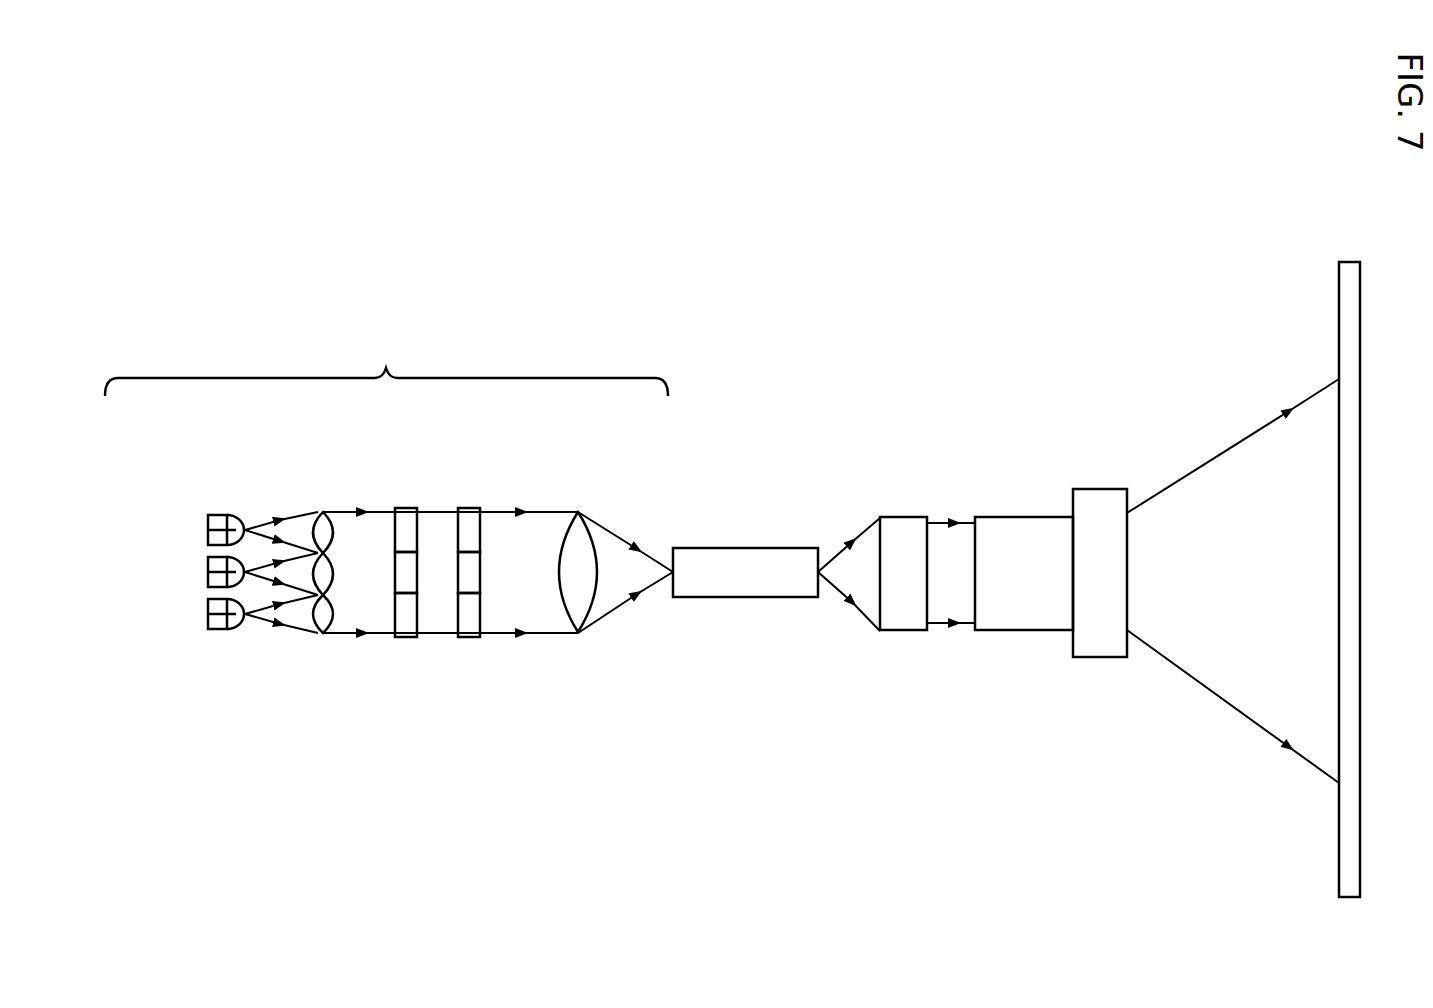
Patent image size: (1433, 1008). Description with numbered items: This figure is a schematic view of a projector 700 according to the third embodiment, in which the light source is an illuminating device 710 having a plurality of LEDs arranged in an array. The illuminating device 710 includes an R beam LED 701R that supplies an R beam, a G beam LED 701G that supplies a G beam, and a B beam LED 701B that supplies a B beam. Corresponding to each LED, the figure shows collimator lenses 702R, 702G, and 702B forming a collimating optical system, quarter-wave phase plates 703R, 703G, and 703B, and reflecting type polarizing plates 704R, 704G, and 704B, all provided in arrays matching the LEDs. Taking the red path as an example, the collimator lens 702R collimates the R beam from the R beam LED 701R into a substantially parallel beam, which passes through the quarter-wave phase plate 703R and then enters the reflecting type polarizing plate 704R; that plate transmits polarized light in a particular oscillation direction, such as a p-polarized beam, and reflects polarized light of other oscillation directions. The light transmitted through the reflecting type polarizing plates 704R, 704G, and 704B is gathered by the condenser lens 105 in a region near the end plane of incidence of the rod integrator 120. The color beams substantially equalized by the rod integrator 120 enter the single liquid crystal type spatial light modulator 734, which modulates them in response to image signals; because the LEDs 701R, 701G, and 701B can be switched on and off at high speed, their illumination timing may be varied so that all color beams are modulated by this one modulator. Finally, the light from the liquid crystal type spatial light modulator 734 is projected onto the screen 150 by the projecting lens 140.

The projector 700 is at (1030, 296).
The illuminating device 710 is at (386, 364).
The R beam LED 701R is at (208, 530).
The G beam LED 701G is at (208, 572).
The B beam LED 701B is at (208, 614).
The collimator lens 702R is at (320, 528).
The collimator lens 702G is at (323, 570).
The collimator lens 702B is at (321, 633).
The λ/4 phase plate 703R is at (405, 507).
The λ/4 phase plate 703G is at (403, 570).
The λ/4 phase plate 703B is at (412, 637).
The reflecting type polarizing plate 704R is at (465, 507).
The reflecting type polarizing plate 704G is at (472, 572).
The reflecting type polarizing plate 704B is at (477, 637).
The condenser lens 105 is at (578, 513).
The rod integrator 120 is at (800, 548).
The liquid crystal type spatial light modulator 734 is at (913, 523).
The projecting lens 140 is at (1108, 497).
The screen 150 is at (1344, 266).